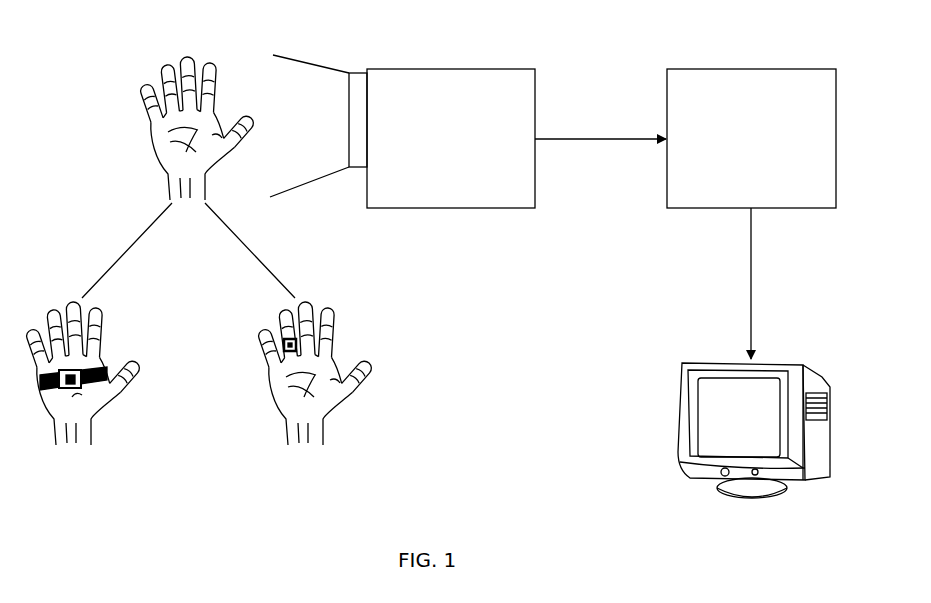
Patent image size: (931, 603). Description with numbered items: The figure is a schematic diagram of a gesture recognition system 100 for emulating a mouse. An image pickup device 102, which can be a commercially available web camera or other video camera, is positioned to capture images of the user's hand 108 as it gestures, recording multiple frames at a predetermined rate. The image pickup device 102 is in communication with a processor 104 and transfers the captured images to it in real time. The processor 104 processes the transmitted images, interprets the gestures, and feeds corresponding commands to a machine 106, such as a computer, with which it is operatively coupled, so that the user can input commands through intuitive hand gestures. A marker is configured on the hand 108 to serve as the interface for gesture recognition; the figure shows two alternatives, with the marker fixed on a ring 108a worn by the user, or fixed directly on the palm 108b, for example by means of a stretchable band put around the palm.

The gesture recognition system 100 is at (108, 25).
The image pickup device 102 is at (439, 156).
The processor 104 is at (739, 156).
The machine 106 is at (678, 421).
The hand 108 is at (147, 100).
The ring 108a is at (132, 380).
The palm 108b is at (362, 382).